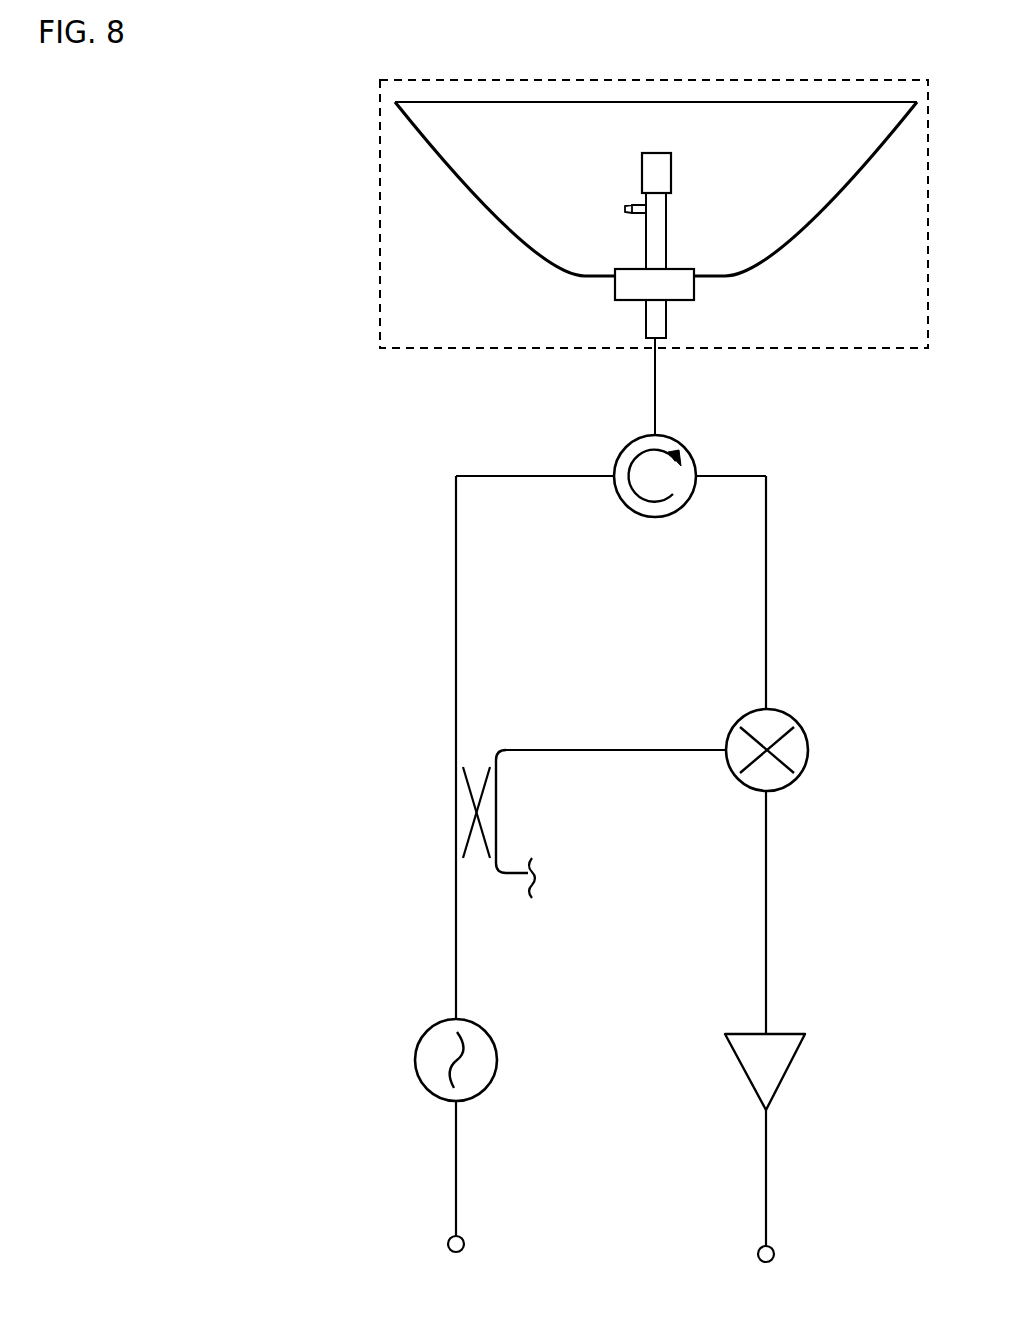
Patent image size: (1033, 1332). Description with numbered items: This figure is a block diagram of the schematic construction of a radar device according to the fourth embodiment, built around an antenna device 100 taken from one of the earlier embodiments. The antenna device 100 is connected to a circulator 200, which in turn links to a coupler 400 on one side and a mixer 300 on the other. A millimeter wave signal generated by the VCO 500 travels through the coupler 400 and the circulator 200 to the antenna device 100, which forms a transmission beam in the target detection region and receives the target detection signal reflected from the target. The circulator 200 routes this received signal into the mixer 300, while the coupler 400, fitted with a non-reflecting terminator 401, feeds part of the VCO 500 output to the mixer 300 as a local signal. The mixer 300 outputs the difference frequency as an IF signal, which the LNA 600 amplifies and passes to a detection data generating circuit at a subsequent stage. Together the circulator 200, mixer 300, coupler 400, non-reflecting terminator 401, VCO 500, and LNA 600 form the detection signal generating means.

The antenna device 100 is at (382, 157).
The circulator 200 is at (622, 452).
The mixer 300 is at (733, 722).
The coupler 400 is at (443, 769).
The non-reflecting terminator 401 is at (541, 883).
The VCO 500 is at (422, 1035).
The LNA 600 is at (740, 1032).